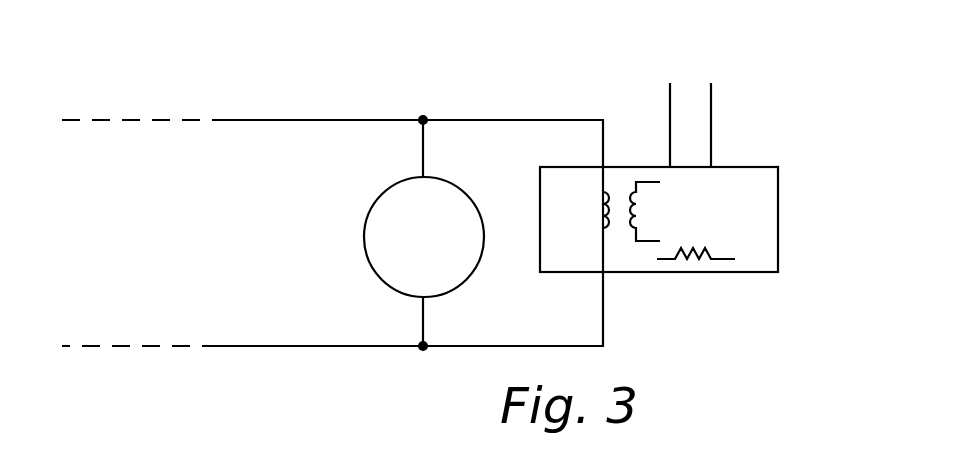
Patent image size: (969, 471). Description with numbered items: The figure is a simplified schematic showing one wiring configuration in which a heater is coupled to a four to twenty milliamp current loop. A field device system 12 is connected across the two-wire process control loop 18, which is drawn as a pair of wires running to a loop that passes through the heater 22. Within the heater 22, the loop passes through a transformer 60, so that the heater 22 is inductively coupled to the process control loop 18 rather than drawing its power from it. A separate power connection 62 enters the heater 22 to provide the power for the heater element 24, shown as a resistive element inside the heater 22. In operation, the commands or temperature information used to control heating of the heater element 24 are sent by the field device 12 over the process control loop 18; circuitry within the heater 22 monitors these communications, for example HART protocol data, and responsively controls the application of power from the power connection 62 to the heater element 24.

The field device system 12 is at (444, 101).
The two-wire process control loop 18 is at (313, 120).
The transformer 60 is at (556, 200).
The power connection 62 is at (670, 104).
The heater 22 is at (740, 178).
The heater element 24 is at (727, 259).